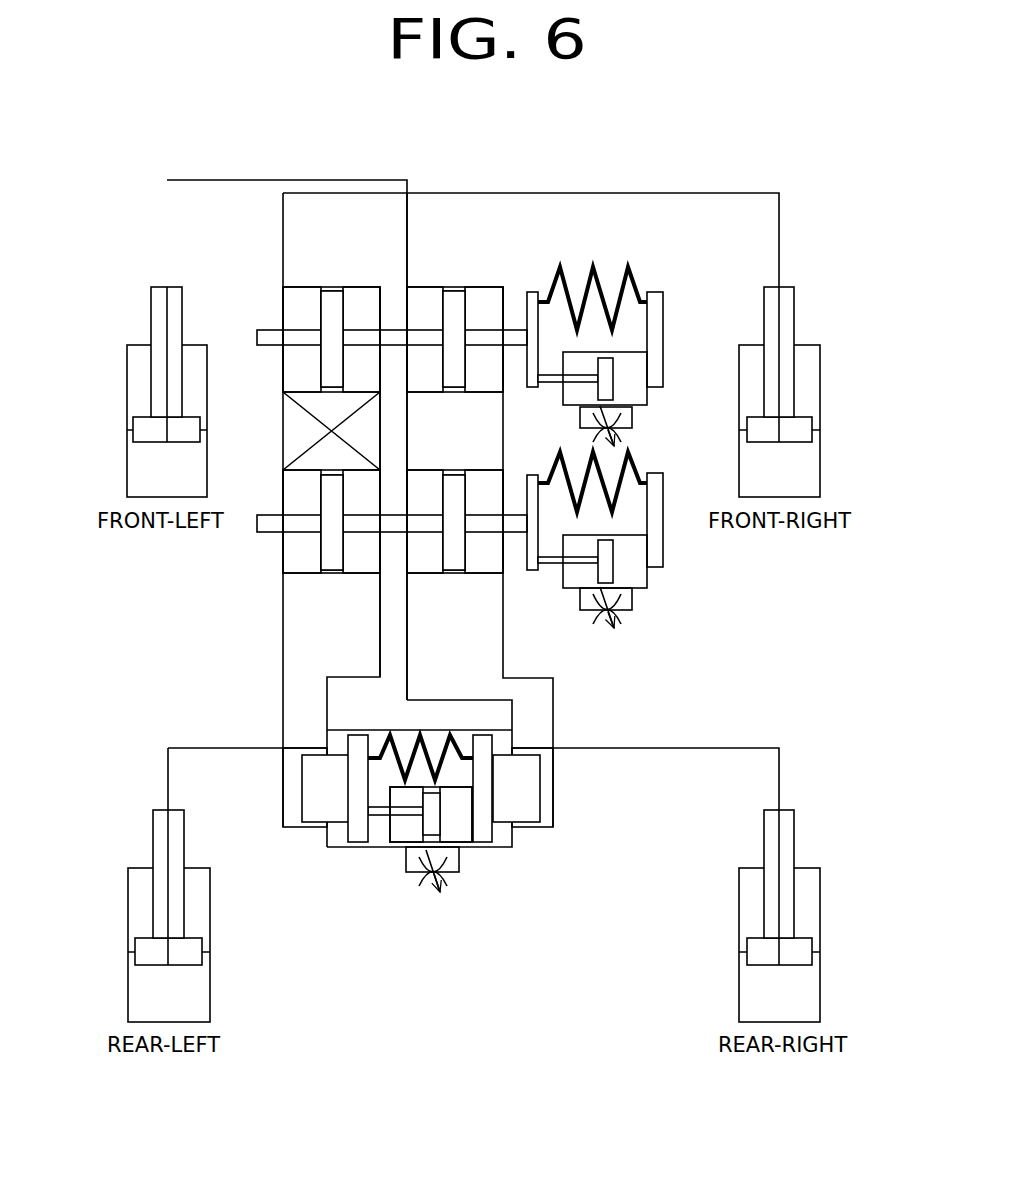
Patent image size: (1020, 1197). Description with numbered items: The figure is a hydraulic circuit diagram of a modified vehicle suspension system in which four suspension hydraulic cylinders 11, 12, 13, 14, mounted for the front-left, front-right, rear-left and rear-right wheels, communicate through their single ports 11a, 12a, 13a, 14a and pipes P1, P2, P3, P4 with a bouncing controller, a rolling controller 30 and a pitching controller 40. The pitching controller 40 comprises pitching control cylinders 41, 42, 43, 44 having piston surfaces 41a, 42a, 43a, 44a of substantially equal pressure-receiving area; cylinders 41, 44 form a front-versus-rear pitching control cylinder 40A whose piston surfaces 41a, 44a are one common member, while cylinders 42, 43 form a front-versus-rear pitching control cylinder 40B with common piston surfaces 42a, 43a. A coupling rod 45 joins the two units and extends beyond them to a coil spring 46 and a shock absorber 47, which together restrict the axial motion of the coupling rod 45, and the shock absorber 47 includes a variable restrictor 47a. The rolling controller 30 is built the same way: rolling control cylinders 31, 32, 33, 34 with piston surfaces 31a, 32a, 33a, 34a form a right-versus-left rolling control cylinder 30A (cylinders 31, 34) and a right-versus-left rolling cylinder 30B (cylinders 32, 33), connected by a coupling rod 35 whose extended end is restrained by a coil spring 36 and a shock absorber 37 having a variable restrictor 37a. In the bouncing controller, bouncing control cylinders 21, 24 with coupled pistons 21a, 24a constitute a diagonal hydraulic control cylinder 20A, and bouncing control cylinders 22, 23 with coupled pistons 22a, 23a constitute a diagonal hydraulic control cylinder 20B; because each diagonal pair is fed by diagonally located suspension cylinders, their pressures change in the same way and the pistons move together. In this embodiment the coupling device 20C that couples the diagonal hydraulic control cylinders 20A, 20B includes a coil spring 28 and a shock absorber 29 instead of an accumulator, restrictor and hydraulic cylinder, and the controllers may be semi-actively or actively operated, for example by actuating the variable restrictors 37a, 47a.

The suspension hydraulic cylinder 11 is at (125, 468).
The port 11a is at (165, 285).
The suspension hydraulic cylinder 12 is at (823, 468).
The port 12a is at (781, 285).
The suspension hydraulic cylinder 13 is at (126, 938).
The port 13a is at (165, 808).
The suspension hydraulic cylinder 14 is at (823, 938).
The port 14a is at (781, 808).
The diagonal hydraulic control cylinder 20A is at (556, 785).
The diagonal hydraulic control cylinder 20B is at (280, 785).
The coupling device 20C is at (380, 834).
The bouncing control cylinder 21 is at (490, 832).
The piston 21a is at (470, 835).
The bouncing control cylinder 22 is at (355, 838).
The piston 22a is at (372, 850).
The bouncing control cylinder 23 is at (298, 829).
The piston 23a is at (305, 830).
The bouncing control cylinder 24 is at (538, 828).
The piston 24a is at (533, 833).
The coil spring 28 is at (443, 760).
The shock absorber 29 is at (461, 882).
The rolling controller 30 is at (238, 580).
The right-versus-left rolling control cylinder 30A is at (507, 572).
The right-versus-left rolling control cylinder 30B is at (281, 568).
The rolling control cylinder 31 is at (428, 575).
The piston surface 31a is at (450, 552).
The rolling control cylinder 32 is at (362, 575).
The piston surface 32a is at (338, 560).
The rolling control cylinder 33 is at (312, 575).
The piston surface 33a is at (272, 572).
The rolling control cylinder 34 is at (487, 575).
The piston surface 34a is at (439, 604).
The coupling rod 35 is at (262, 533).
The coil spring 36 is at (637, 470).
The shock absorber 37 is at (580, 612).
The variable restrictor 37a is at (615, 625).
The pitching controller 40 is at (668, 318).
The front-versus-rear pitching control cylinder 40A is at (508, 284).
The front-versus-rear pitching control cylinder 40B is at (280, 284).
The pitching control cylinder 41 is at (424, 286).
The piston surface 41a is at (455, 300).
The pitching control cylinder 42 is at (300, 286).
The piston surface 42a is at (330, 300).
The pitching control cylinder 43 is at (360, 286).
The piston surface 43a is at (369, 261).
The pitching control cylinder 44 is at (483, 286).
The piston surface 44a is at (495, 290).
The coupling rod 45 is at (268, 346).
The coil spring 46 is at (628, 268).
The shock absorber 47 is at (572, 412).
The variable restrictor 47a is at (615, 435).
The pipe P1 is at (205, 178).
The pipe P2 is at (690, 191).
The pipe P3 is at (180, 747).
The pipe P4 is at (693, 747).